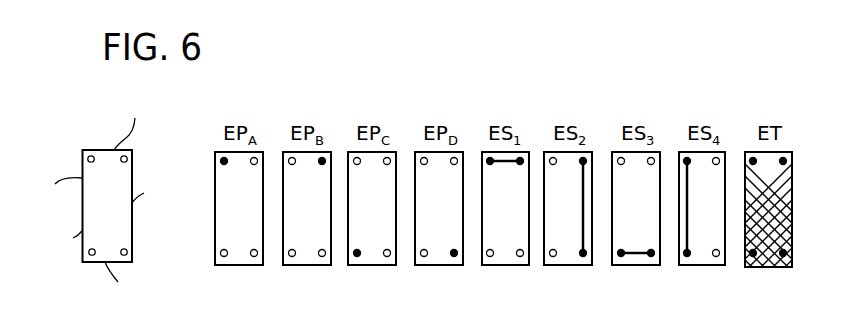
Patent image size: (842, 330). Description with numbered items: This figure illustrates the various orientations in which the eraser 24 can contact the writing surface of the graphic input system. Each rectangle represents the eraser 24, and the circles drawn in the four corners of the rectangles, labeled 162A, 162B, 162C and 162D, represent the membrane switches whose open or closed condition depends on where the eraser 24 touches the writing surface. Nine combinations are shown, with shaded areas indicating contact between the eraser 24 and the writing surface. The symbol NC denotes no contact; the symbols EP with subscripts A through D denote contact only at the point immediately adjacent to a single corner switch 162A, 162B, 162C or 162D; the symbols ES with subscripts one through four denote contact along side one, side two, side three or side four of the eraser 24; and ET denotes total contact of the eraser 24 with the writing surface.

The eraser 24 is at (82, 212).
The hole 162A is at (88, 158).
The hole 162B is at (127, 158).
The hole 162C is at (89, 254).
The hole 162D is at (127, 250).